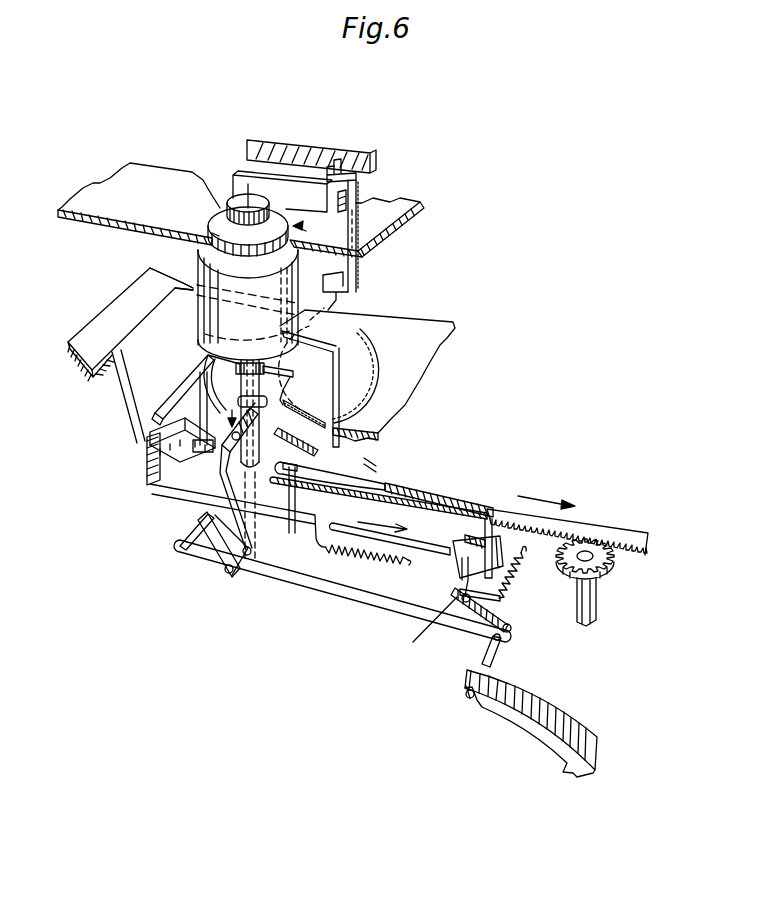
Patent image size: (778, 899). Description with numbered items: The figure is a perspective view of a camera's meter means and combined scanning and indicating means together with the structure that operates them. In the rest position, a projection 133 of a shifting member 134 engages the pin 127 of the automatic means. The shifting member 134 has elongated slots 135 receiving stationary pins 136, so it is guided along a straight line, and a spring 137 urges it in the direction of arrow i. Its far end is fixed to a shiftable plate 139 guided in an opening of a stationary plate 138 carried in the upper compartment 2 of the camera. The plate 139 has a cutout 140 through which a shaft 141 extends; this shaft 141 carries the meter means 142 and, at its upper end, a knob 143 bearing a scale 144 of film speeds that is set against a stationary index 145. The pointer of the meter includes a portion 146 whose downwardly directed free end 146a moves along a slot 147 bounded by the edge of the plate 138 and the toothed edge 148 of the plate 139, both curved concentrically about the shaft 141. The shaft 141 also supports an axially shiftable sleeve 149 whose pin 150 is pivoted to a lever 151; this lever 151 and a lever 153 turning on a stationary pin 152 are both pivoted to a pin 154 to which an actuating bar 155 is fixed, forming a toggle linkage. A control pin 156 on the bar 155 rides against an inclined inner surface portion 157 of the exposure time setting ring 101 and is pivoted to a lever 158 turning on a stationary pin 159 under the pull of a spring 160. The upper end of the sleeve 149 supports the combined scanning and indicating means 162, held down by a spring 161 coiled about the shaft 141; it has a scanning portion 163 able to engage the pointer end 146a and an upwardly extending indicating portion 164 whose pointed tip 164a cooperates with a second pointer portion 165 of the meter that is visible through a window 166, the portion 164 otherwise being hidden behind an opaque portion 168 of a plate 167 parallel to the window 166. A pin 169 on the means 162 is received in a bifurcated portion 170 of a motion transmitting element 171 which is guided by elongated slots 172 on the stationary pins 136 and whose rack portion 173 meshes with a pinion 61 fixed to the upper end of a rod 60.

The upper compartment 2 is at (120, 182).
The rod 60 is at (594, 605).
The pinion 61 is at (604, 565).
The exposure time setting ring 101 is at (585, 740).
The pin 127 is at (428, 626).
The projection 133 is at (458, 575).
The shifting member 134 is at (190, 487).
The elongated slots 135 is at (291, 505).
The stationary pins 136 is at (390, 485).
The spring 137 is at (380, 562).
The stationary plate 138 is at (93, 335).
The shiftable plate 139 is at (133, 385).
The cutout 140 is at (210, 388).
The shaft 141 is at (206, 355).
The meter means 142 is at (198, 268).
The knob 143 is at (222, 213).
The scale 144 is at (361, 253).
The stationary index 145 is at (316, 231).
The pointer portion 146 is at (333, 340).
The free end portion 146a is at (342, 380).
The slot 147 is at (377, 358).
The toothed edge 148 is at (373, 335).
The sleeve 149 is at (290, 432).
The pin 150 is at (197, 380).
The lever 151 is at (222, 480).
The stationary pin 152 is at (251, 552).
The lever 153 is at (228, 567).
The pin 154 is at (200, 562).
The actuating bar 155 is at (367, 608).
The control pin 156 is at (497, 655).
The inclined inner surface portion 157 is at (483, 703).
The lever 158 is at (511, 627).
The stationary pin 159 is at (500, 599).
The spring 160 is at (516, 578).
The spring 161 is at (256, 368).
The combined scanning and indicating means 162 is at (160, 418).
The scanning portion 163 is at (381, 434).
The indicating portion 164 is at (357, 277).
The pointed free end portion 164a is at (357, 178).
The pointer portion 165 is at (320, 185).
The window 166 is at (342, 161).
The plate 167 is at (260, 187).
The opaque portion 168 is at (358, 200).
The pin 169 is at (150, 441).
The bifurcated portion 170 is at (150, 483).
The motion transmitting element 171 is at (370, 463).
The elongated slots 172 is at (478, 503).
The rack portion 173 is at (550, 528).